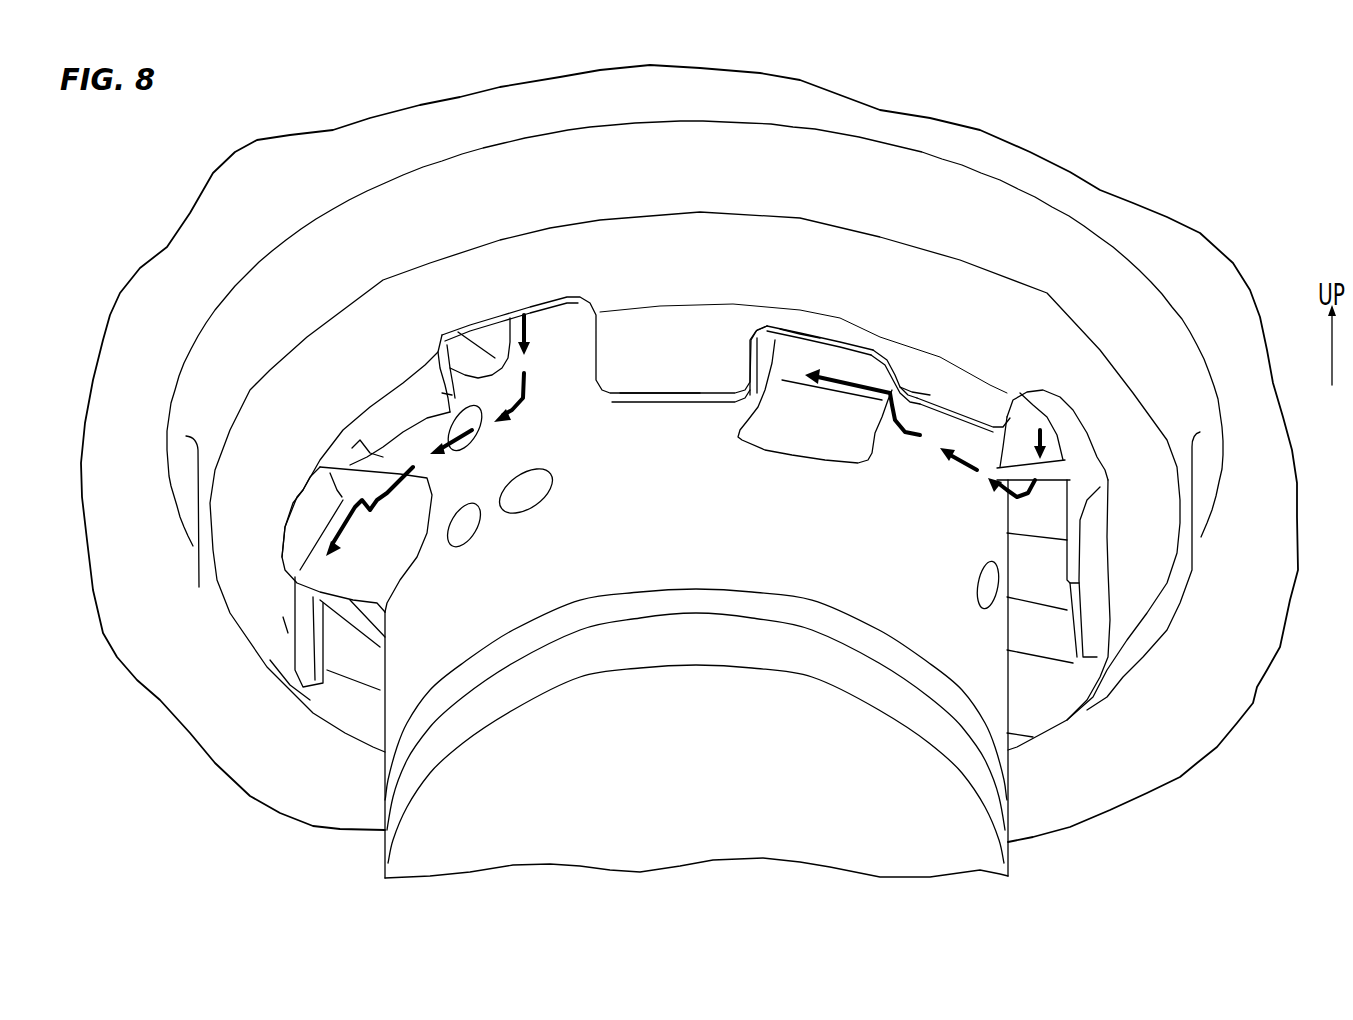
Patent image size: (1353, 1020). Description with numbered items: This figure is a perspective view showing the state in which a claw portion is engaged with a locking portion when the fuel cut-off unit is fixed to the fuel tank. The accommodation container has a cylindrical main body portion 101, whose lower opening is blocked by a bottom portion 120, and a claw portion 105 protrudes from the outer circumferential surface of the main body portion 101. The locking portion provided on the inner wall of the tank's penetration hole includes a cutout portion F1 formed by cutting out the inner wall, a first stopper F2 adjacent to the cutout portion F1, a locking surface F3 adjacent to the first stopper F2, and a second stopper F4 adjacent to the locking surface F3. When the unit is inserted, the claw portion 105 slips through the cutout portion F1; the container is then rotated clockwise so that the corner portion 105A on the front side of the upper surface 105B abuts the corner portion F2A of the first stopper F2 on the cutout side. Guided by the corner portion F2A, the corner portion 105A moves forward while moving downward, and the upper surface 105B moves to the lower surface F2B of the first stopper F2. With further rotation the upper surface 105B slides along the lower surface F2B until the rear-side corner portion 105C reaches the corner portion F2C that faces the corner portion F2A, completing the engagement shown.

The main body portion 101 is at (689, 453).
The bottom portion 120 is at (696, 679).
The claw portion 105 is at (696, 523).
The corner portion 105A is at (740, 324).
The upper surface 105B is at (820, 297).
The corner portion 105C is at (889, 342).
The cutout portion F1 is at (1111, 417).
The first stopper F2 is at (920, 446).
The corner portion F2A is at (1052, 409).
The lower surface F2B is at (965, 371).
The corner portion F2C is at (935, 333).
The locking surface F3 is at (797, 281).
The second stopper F4 is at (660, 456).